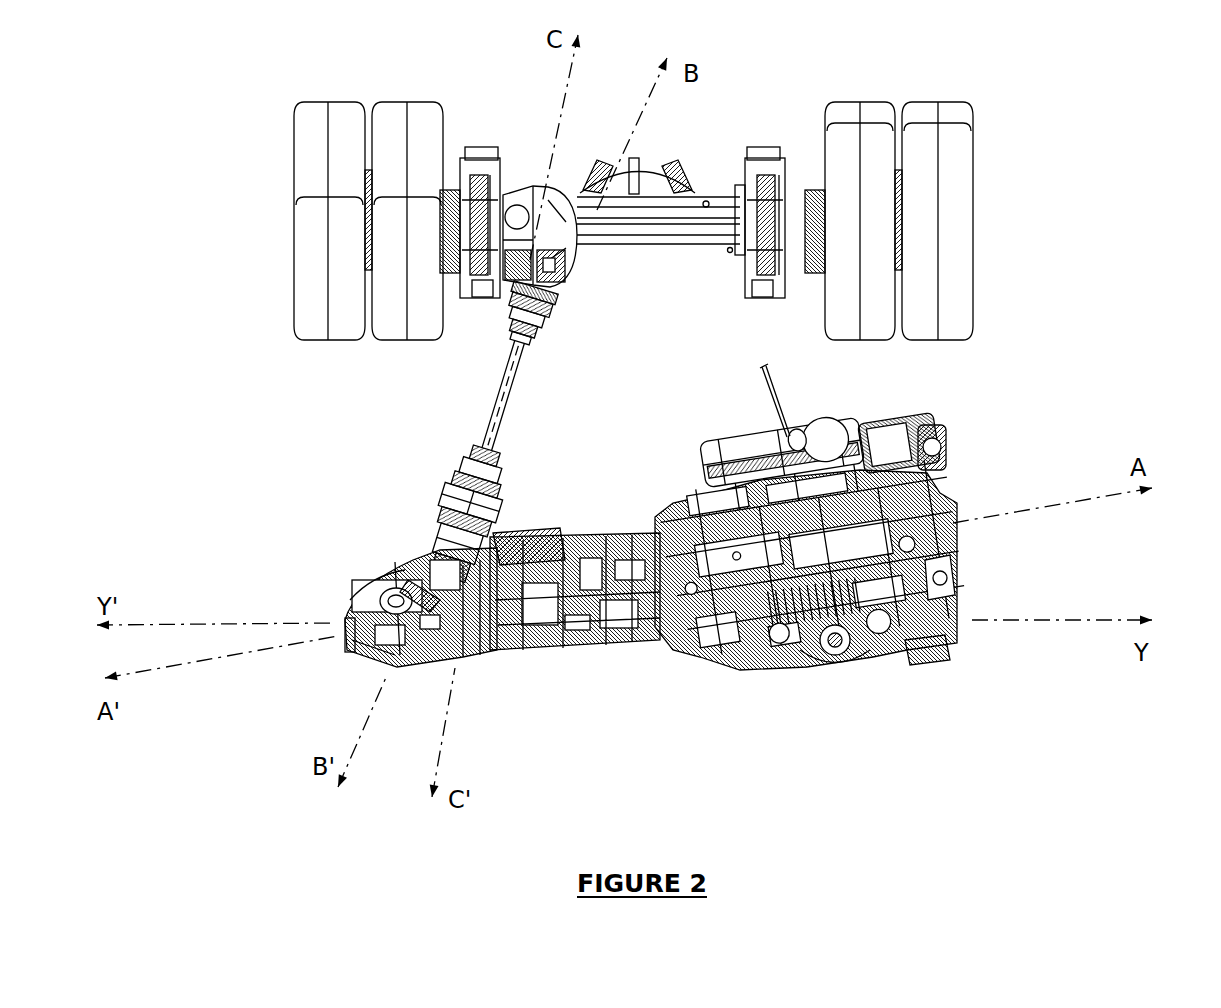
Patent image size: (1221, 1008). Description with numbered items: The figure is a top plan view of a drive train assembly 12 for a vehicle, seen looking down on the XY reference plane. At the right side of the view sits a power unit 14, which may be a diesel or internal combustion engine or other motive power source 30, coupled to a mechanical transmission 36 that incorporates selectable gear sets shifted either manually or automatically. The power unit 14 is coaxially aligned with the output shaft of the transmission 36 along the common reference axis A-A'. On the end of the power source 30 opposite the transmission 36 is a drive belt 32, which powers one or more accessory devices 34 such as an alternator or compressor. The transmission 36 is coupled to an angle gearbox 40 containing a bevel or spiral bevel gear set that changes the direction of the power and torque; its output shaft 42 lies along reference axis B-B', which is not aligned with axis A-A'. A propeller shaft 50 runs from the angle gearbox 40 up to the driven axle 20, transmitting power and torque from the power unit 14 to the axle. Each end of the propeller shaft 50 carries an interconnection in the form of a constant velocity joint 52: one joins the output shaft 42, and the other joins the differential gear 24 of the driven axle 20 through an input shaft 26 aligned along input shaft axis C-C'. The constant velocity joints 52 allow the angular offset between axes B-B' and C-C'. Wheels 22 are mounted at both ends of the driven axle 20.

The drive train assembly 12 is at (677, 683).
The power unit 14 is at (965, 482).
The driven axle 20 is at (672, 213).
The wheels 22 is at (397, 170).
The differential gear 24 is at (572, 248).
The input shaft 26 is at (525, 307).
The motive power source 30 is at (835, 647).
The drive belt 32 is at (943, 577).
The accessory devices 34 is at (945, 440).
The mechanical transmission 36 is at (568, 650).
The angle gearbox 40 is at (387, 653).
The output shaft 42 is at (417, 552).
The propeller shaft 50 is at (500, 387).
The constant velocity joint 52 is at (513, 335).